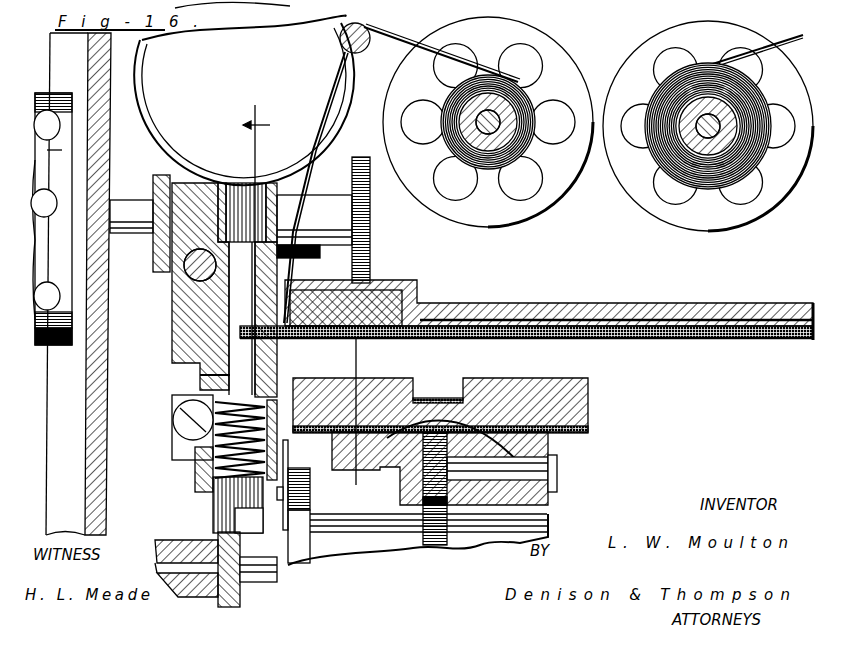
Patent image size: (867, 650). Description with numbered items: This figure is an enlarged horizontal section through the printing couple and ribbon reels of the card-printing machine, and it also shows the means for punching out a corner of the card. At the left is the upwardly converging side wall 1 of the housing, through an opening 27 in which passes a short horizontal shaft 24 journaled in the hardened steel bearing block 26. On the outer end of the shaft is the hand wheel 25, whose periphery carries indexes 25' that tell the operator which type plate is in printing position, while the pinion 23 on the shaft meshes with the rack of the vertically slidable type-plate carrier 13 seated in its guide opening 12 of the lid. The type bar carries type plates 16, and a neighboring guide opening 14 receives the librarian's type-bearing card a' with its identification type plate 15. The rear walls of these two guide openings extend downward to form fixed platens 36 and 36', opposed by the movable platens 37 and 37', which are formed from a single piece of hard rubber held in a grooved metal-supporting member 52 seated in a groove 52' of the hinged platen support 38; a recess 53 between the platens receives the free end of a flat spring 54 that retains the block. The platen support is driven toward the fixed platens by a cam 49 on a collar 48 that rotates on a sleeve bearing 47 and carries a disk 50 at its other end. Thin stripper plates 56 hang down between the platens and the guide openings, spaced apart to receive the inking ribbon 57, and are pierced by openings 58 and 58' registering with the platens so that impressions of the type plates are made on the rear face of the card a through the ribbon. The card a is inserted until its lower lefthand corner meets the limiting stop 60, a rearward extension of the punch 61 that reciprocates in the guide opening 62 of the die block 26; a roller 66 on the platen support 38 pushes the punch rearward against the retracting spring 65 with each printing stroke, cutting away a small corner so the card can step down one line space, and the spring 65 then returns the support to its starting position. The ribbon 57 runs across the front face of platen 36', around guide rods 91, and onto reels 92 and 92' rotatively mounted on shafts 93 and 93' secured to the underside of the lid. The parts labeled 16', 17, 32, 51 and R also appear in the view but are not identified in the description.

The side wall 1 is at (85, 407).
The vertical guide opening 12 is at (360, 157).
The type-plate carrier 13 is at (400, 282).
The vertical guide opening 14 is at (692, 316).
The type plate 15 is at (497, 339).
The type plates 16 is at (338, 349).
The feed strip 16' is at (452, 289).
The spindle axis 17 is at (256, 110).
The pinion 23 is at (385, 222).
The horizontal shaft 24 is at (125, 210).
The hand wheel 25 is at (53, 205).
The indexes 25' is at (48, 274).
The bearing block 26 is at (175, 333).
The opening 27 is at (72, 198).
The plate 32 is at (153, 252).
The fixed platen 36 is at (383, 267).
The fixed platen 36' is at (523, 289).
The movable platen 37 is at (440, 396).
The movable platen 37' is at (532, 372).
The platen support 38 is at (160, 541).
The sleeve bearing 47 is at (232, 598).
The collar 48 is at (372, 552).
The cam 49 is at (437, 548).
The disk 50 is at (305, 510).
The nut 51 is at (402, 493).
The grooved metal-supporting member 52 is at (612, 437).
The groove 52' is at (427, 463).
The recess 53 is at (447, 398).
The flat spring 54 is at (430, 398).
The stripper plates 56 is at (641, 336).
The inking ribbon 57 is at (708, 343).
The opening 58 is at (314, 350).
The opening 58' is at (567, 350).
The limiting stop 60 is at (240, 312).
The punch 61 is at (243, 385).
The guide opening 62 is at (200, 375).
The retracting spring 65 is at (197, 468).
The roller 66 is at (220, 538).
The guide rods 91 is at (340, 40).
The reel 92 is at (488, 122).
The reel 92' is at (708, 126).
The shaft 93 is at (488, 158).
The shaft 93' is at (707, 164).
The roll R is at (244, 104).
The card a is at (460, 350).
The type-bearing card a' is at (650, 293).